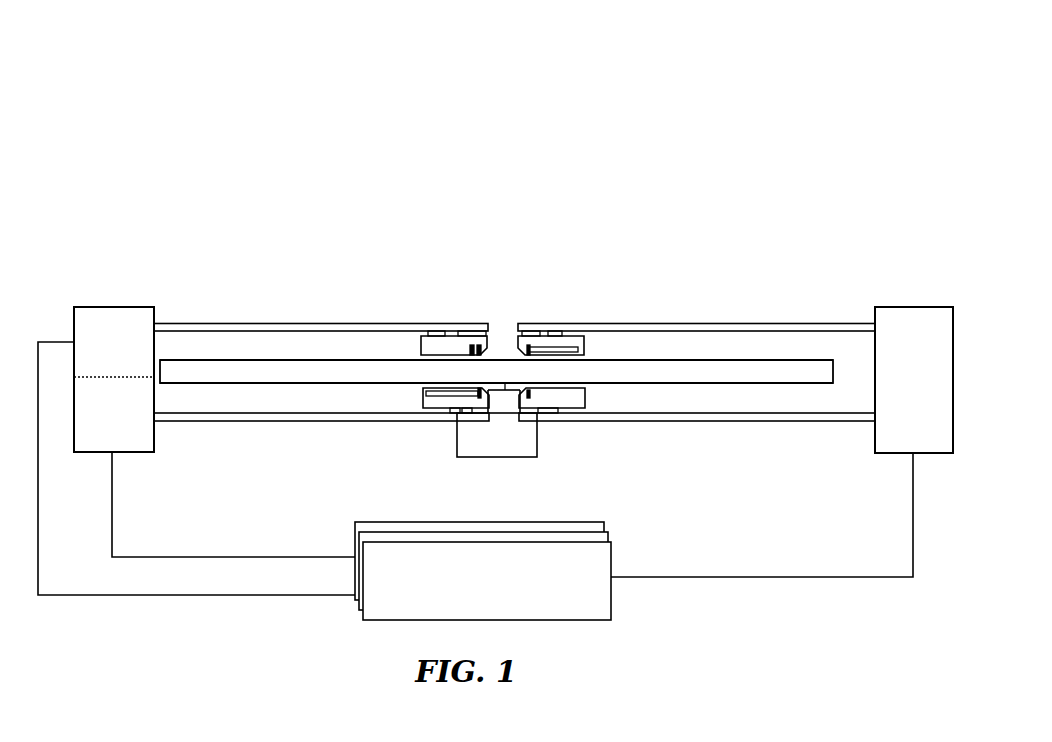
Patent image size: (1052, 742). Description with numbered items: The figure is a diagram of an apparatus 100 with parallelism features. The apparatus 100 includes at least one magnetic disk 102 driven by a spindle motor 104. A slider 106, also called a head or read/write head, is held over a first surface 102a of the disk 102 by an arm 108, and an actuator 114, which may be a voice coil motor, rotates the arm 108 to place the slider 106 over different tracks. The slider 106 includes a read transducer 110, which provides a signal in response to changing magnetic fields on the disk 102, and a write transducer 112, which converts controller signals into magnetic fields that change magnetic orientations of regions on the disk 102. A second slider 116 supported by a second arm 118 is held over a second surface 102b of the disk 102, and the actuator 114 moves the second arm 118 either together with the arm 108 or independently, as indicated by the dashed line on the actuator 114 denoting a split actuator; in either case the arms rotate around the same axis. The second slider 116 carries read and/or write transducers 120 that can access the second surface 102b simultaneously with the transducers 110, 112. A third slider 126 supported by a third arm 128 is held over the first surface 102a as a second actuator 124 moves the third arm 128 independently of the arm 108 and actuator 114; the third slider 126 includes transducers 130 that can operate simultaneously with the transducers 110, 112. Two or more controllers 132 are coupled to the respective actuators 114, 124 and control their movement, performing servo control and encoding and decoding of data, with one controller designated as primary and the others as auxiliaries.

The apparatus 100 is at (369, 160).
The magnetic disk 102 is at (833, 366).
The first surface 102a is at (680, 360).
The second surface 102b is at (768, 385).
The spindle motor 104 is at (473, 457).
The slider 106 is at (433, 345).
The arm 108 is at (298, 323).
The read transducer 110 is at (480, 345).
The write transducer 112 is at (473, 345).
The actuator 114 is at (103, 312).
The second slider 116 is at (433, 408).
The second arm 118 is at (285, 421).
The read and/or write transducers 120 is at (425, 393).
The second actuator 124 is at (905, 307).
The third slider 126 is at (555, 343).
The third arm 128 is at (710, 323).
The read and/or write transducers 130 is at (584, 349).
The controllers 132 is at (713, 421).